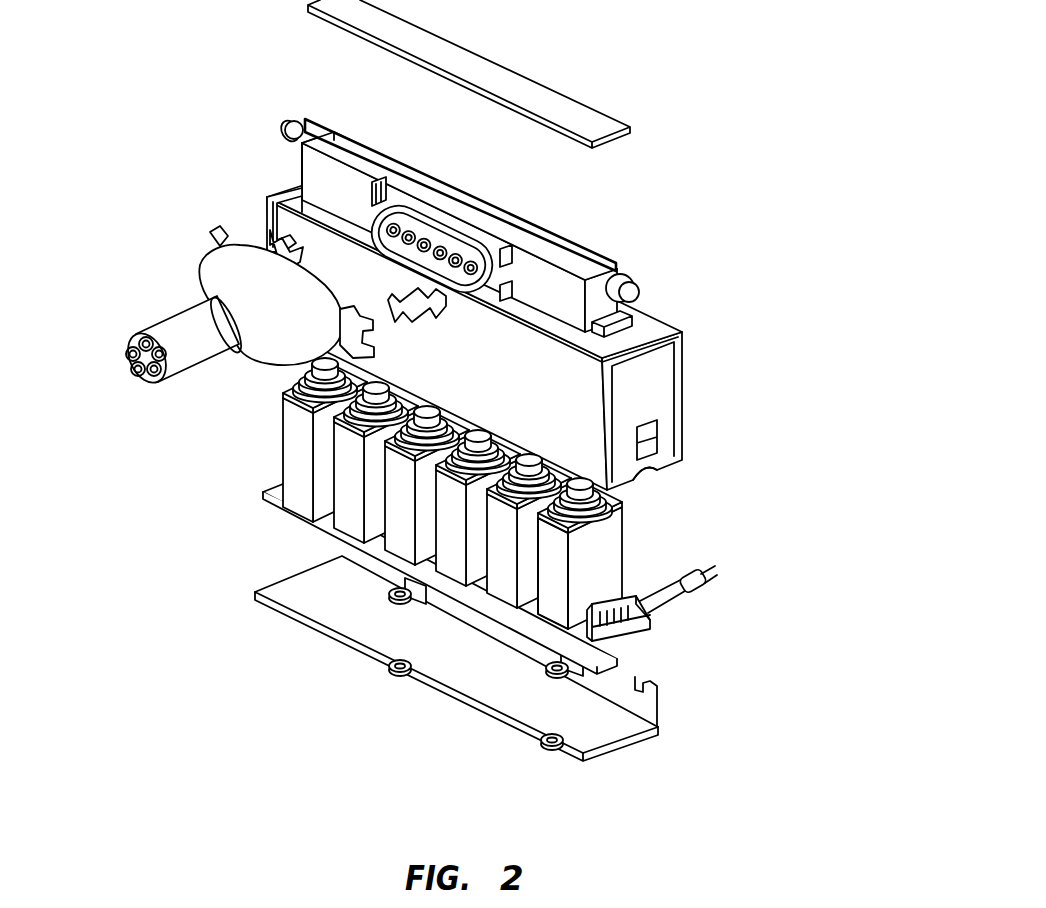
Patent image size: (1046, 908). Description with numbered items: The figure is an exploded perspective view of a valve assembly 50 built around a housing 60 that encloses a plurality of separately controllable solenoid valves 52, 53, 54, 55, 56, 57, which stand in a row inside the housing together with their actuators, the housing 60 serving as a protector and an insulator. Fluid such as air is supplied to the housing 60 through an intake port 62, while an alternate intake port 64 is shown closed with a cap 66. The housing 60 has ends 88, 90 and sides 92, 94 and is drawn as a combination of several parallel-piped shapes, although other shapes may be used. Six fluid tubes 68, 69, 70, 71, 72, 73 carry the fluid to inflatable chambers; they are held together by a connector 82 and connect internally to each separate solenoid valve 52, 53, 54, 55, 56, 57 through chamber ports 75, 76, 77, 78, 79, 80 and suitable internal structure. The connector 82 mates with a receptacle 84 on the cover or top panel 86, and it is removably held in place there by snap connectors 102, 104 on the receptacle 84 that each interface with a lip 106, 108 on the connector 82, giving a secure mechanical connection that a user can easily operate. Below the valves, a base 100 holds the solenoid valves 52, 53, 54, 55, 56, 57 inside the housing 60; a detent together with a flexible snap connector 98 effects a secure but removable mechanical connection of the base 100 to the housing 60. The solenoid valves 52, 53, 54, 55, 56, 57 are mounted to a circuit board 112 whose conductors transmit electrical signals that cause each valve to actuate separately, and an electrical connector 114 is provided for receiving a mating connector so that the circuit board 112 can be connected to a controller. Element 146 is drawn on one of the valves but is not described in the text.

The valve assembly 50 is at (806, 151).
The solenoid valve 52 is at (564, 600).
The solenoid valve 53 is at (511, 575).
The solenoid valve 54 is at (461, 550).
The solenoid valve 55 is at (407, 525).
The solenoid valve 56 is at (357, 499).
The solenoid valve 57 is at (304, 437).
The housing 60 is at (687, 413).
The intake port 62 is at (640, 262).
The alternate intake port 64 is at (322, 128).
The cap 66 is at (296, 124).
The fluid tube 68 is at (193, 325).
The fluid tube 69 is at (148, 338).
The fluid tube 70 is at (128, 349).
The fluid tube 71 is at (131, 366).
The fluid tube 72 is at (148, 375).
The fluid tube 73 is at (166, 360).
The chamber port 75 is at (466, 260).
The chamber port 76 is at (450, 252).
The chamber port 77 is at (434, 244).
The chamber port 78 is at (418, 236).
The chamber port 79 is at (400, 226).
The chamber port 80 is at (380, 168).
The connector 82 is at (222, 283).
The receptacle 84 is at (470, 205).
The top panel 86 is at (555, 280).
The end 88 is at (286, 186).
The end 90 is at (667, 452).
The side 92 is at (576, 452).
The side 94 is at (687, 376).
The flexible snap connector 98 is at (647, 434).
The base 100 is at (600, 712).
The snap connector 102 is at (466, 337).
The snap connector 104 is at (222, 244).
The lip 106 is at (368, 310).
The lip 108 is at (214, 234).
The circuit board 112 is at (584, 652).
The electrical connector 114 is at (684, 592).
The cartridge body 146 is at (560, 566).